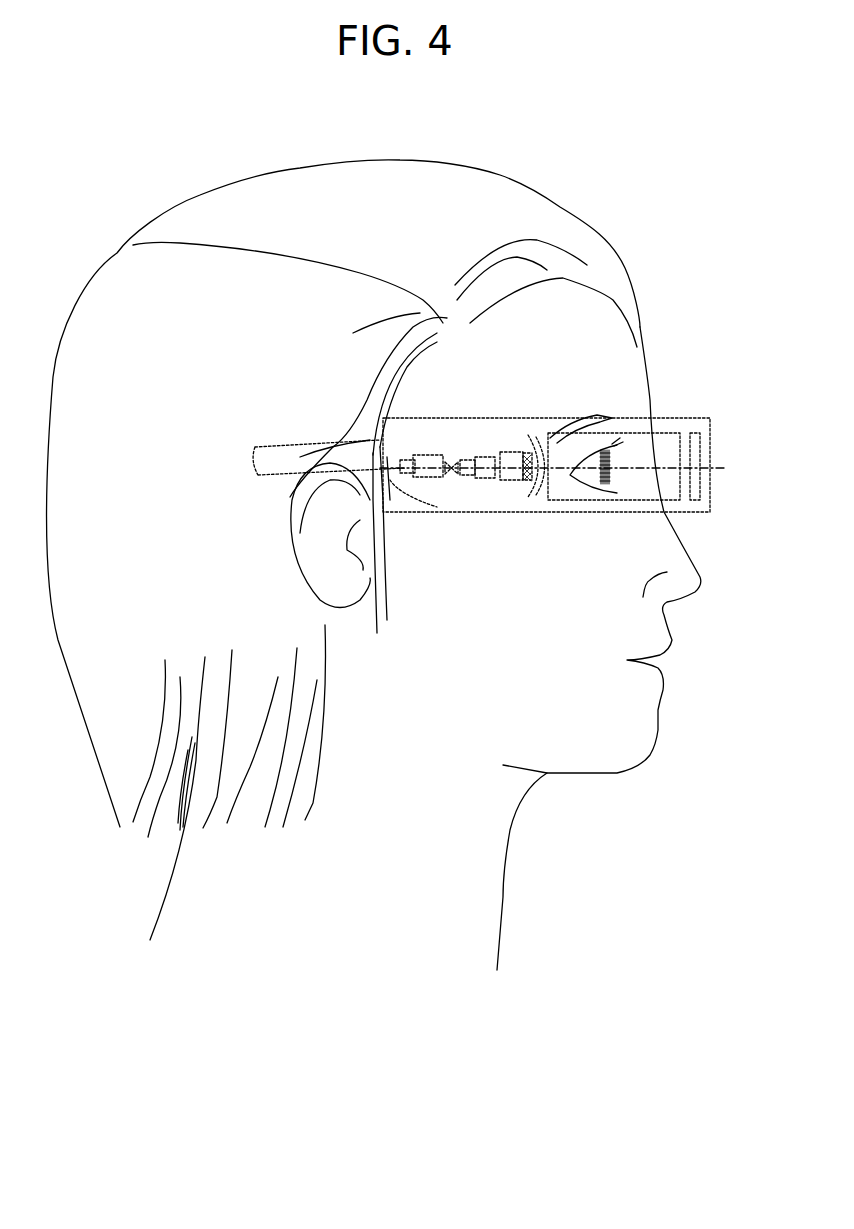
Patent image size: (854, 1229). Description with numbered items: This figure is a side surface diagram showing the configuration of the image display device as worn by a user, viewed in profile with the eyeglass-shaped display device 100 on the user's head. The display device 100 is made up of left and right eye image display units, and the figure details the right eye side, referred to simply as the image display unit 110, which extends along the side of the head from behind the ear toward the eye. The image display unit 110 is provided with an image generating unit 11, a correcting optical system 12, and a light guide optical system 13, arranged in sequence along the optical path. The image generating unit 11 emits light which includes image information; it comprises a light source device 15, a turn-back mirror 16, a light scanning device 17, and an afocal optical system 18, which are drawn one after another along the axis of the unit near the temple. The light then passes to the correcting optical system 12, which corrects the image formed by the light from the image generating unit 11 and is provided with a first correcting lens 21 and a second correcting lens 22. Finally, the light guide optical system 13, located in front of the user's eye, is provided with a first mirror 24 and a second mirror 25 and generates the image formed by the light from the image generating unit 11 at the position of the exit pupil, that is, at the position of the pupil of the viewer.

The display device 100 is at (525, 374).
The image display unit 110 is at (587, 405).
The image generating unit 11 is at (405, 505).
The correcting optical system 12 is at (551, 570).
The light guide optical system 13 is at (748, 338).
The light source device 15 is at (418, 452).
The turn-back mirror 16 is at (462, 477).
The light scanning device 17 is at (437, 476).
The afocal optical system 18 is at (483, 455).
The first correcting lens 21 is at (510, 481).
The second correcting lens 22 is at (540, 486).
The first mirror 24 is at (668, 443).
The second mirror 25 is at (705, 442).